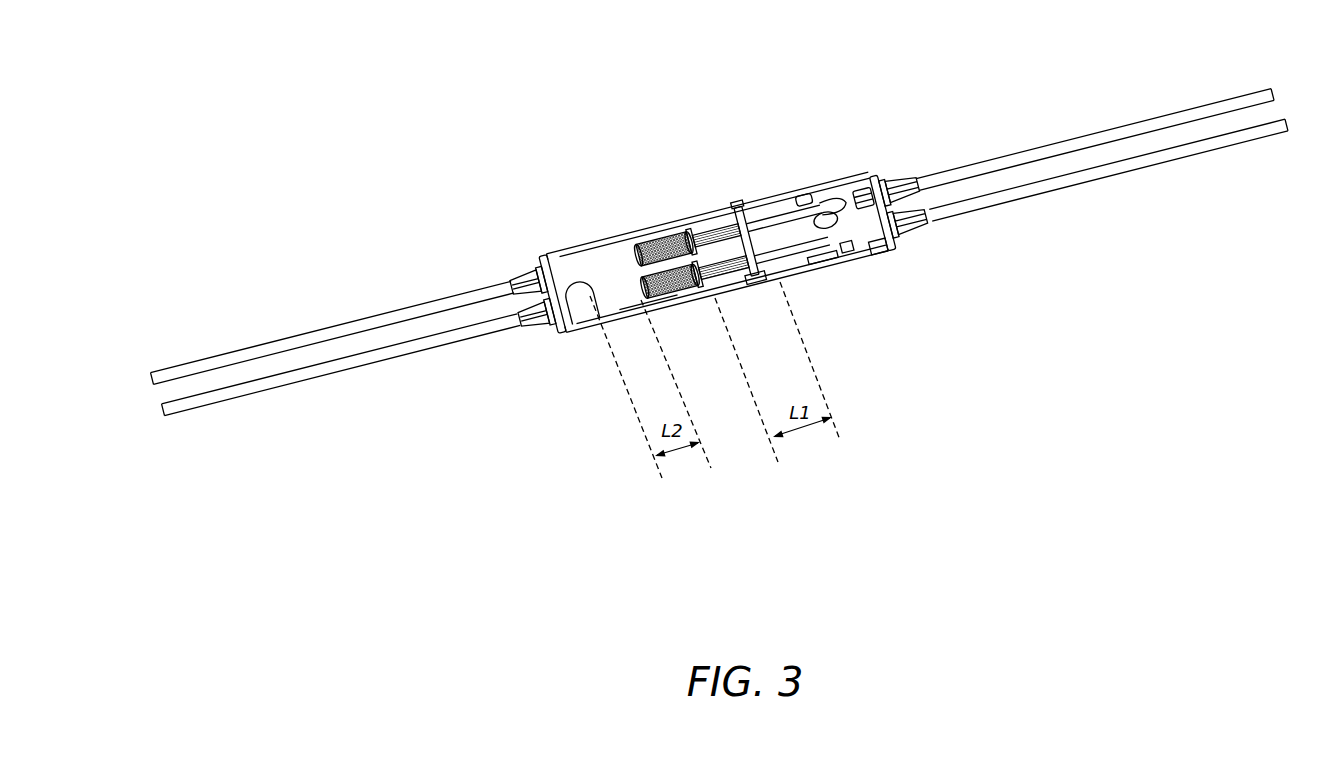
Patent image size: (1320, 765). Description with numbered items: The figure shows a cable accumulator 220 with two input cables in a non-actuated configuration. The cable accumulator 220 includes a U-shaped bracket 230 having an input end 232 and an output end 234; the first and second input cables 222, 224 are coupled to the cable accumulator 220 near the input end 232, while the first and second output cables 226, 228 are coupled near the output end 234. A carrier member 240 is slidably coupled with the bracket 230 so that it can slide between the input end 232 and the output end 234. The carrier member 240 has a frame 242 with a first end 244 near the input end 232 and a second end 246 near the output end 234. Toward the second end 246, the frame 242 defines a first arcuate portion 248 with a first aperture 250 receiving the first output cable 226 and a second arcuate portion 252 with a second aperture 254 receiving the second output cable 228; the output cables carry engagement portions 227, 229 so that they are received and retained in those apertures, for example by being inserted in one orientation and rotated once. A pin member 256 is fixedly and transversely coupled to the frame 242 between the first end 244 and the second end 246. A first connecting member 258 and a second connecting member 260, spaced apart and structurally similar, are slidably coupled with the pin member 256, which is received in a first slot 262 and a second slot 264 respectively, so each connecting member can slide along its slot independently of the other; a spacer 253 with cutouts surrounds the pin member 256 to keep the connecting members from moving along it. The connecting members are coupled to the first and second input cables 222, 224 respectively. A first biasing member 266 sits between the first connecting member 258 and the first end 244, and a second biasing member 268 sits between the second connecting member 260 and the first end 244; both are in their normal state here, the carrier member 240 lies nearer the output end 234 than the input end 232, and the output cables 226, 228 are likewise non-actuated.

The cable accumulator 220 is at (725, 126).
The first input cable 222 is at (268, 383).
The second input cable 224 is at (187, 364).
The first output cable 226 is at (1192, 148).
The second output cable 228 is at (1123, 131).
The bracket 230 is at (598, 334).
The input end 232 is at (553, 346).
The output end 234 is at (908, 258).
The carrier member 240 is at (709, 196).
The frame 242 is at (721, 300).
The first end 244 is at (645, 322).
The second end 246 is at (881, 250).
The first arcuate portion 248 is at (857, 194).
The first aperture 250 is at (821, 264).
The second arcuate portion 252 is at (845, 208).
The spacer 253 is at (734, 200).
The second aperture 254 is at (804, 200).
The pin member 256 is at (753, 291).
The first connecting member 258 is at (800, 245).
The second connecting member 260 is at (682, 213).
The first slot 262 is at (735, 295).
The second slot 264 is at (778, 212).
The first biasing member 266 is at (677, 298).
The second biasing member 268 is at (652, 231).
The engagement portion 227 is at (848, 250).
The engagement portion 229 is at (811, 205).